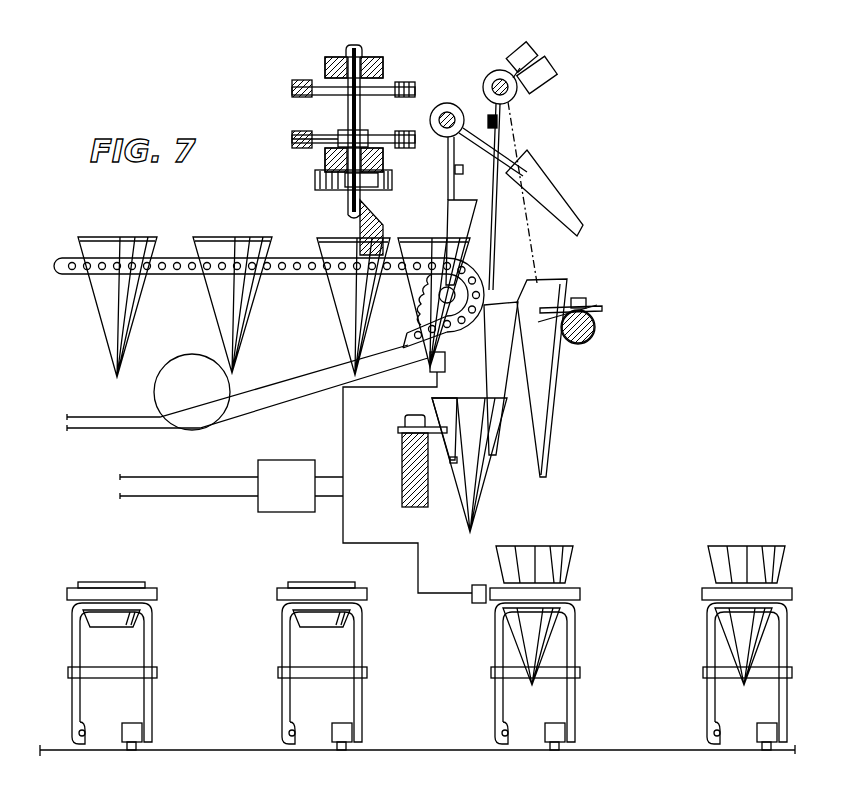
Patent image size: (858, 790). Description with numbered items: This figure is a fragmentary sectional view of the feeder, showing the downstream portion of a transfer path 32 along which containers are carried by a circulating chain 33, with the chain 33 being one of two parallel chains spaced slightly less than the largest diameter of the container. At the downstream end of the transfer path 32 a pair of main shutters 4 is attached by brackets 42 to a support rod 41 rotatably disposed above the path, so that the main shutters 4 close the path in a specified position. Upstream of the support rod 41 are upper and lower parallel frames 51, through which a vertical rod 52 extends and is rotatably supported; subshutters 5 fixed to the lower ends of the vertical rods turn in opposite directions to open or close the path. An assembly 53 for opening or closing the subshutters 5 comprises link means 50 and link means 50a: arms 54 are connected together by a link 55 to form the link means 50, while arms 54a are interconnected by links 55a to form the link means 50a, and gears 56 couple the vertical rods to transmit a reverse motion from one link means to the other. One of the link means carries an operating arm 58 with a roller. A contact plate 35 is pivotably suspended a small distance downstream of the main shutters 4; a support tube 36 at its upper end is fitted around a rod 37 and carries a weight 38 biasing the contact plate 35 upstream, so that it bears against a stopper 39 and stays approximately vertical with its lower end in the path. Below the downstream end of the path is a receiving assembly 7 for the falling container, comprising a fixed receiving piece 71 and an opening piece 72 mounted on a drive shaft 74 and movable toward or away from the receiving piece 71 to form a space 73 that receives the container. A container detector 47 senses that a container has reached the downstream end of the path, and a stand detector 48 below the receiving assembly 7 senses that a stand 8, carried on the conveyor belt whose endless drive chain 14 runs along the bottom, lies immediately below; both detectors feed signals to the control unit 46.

The main shutter 4 is at (452, 208).
The subshutter 5 is at (377, 222).
The receiving assembly 7 is at (514, 462).
The stand 8 is at (363, 661).
The endless drive chain 14 is at (447, 749).
The transfer path 32 is at (173, 250).
The circulating chain 33 is at (70, 257).
The contact plate 35 is at (488, 280).
The support tube 36 is at (495, 73).
The rod 37 is at (512, 100).
The weight 38 is at (546, 80).
The stopper 39 is at (488, 120).
The support rod 41 is at (460, 99).
The bracket 42 is at (490, 150).
The control unit 46 is at (298, 495).
The container detector 47 is at (446, 362).
The stand detector 48 is at (474, 588).
The link means 50 is at (292, 85).
The link means 50a is at (292, 140).
The parallel frame 51 is at (385, 74).
The vertical rod 52 is at (384, 64).
The assembly for opening or closing the subshutters 53 is at (250, 96).
The arm 54 is at (308, 97).
The arm 54a is at (303, 148).
The link 55 is at (300, 80).
The link 55a is at (330, 134).
The gear 56 is at (315, 184).
The operating arm 58 is at (378, 186).
The receiving piece 71 is at (455, 461).
The opening piece 72 is at (456, 440).
The space 73 is at (483, 405).
The drive shaft 74 is at (575, 337).